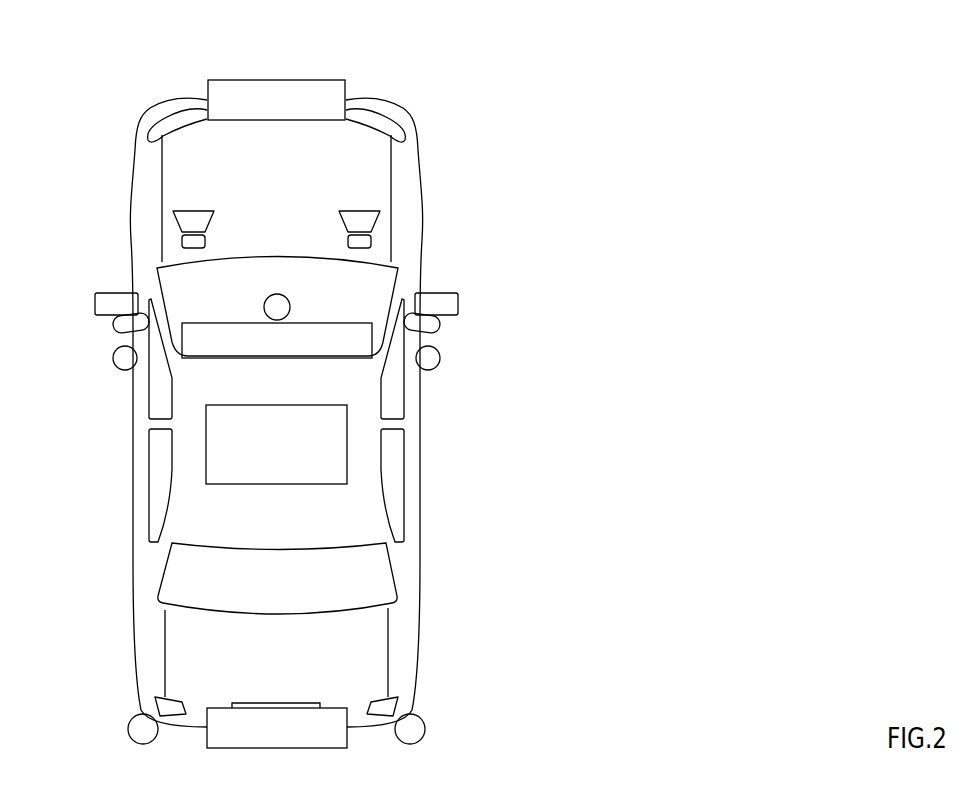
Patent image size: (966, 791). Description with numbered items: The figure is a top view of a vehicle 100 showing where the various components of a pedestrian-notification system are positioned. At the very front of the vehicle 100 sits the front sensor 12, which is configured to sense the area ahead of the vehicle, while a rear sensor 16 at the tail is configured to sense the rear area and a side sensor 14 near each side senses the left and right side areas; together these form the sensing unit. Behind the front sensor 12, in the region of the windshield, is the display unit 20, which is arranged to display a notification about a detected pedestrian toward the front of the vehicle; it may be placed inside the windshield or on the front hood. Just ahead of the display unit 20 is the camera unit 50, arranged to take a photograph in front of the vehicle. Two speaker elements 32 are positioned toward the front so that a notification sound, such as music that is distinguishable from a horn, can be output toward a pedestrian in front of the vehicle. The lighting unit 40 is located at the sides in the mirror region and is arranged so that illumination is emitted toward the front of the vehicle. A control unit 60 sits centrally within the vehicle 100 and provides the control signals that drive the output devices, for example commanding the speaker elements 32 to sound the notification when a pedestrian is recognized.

The vehicle 100 is at (477, 52).
The front sensor 12 is at (365, 104).
The speakers 32 is at (215, 222).
The camera unit 50 is at (264, 301).
The display unit 20 is at (298, 323).
The lighting unit 40 is at (140, 305).
The side sensor 14 is at (126, 371).
The control unit 60 is at (348, 443).
The rear sensor 16 is at (186, 712).